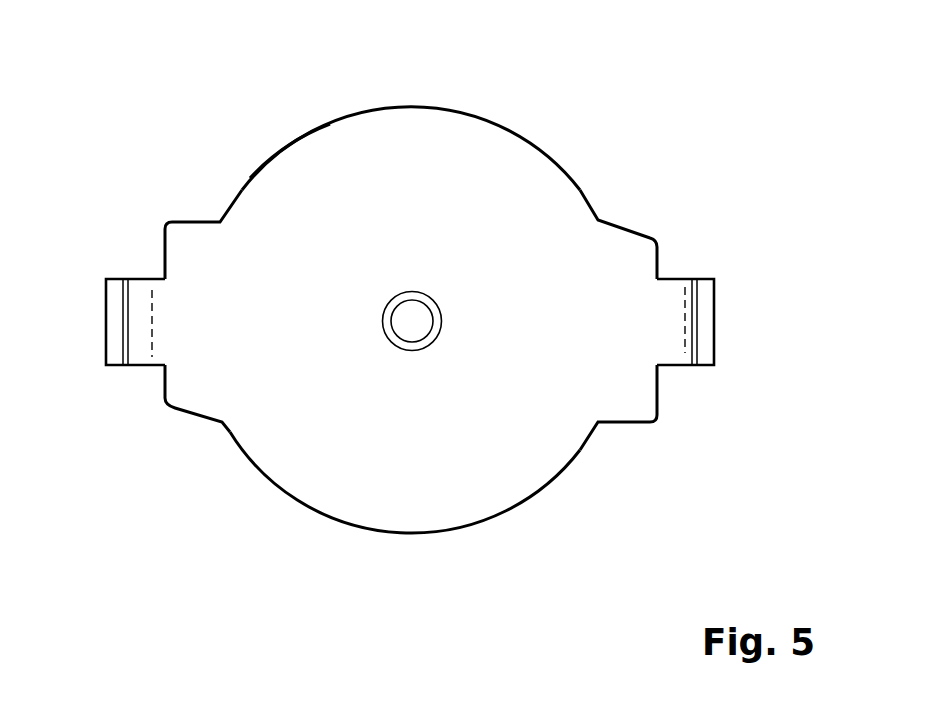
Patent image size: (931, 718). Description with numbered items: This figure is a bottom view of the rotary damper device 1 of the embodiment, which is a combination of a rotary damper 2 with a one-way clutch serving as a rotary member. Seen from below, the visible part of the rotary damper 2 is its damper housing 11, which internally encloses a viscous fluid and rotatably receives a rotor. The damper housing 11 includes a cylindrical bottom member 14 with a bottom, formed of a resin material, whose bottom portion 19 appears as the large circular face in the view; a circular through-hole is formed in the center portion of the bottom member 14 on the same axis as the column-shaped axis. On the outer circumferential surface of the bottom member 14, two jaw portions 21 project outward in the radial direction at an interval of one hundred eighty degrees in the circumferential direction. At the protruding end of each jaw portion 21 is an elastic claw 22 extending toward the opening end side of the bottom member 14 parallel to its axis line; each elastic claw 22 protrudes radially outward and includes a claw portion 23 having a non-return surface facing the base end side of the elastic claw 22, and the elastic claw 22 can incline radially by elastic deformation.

The rotary damper device 1 is at (558, 72).
The rotary damper 2 is at (572, 175).
The damper housing 11 is at (522, 508).
The bottom member 14 is at (456, 158).
The bottom portion 19 is at (312, 168).
The jaw portions 21 is at (203, 402).
The elastic claw 22 is at (142, 352).
The claw portion 23 is at (115, 312).